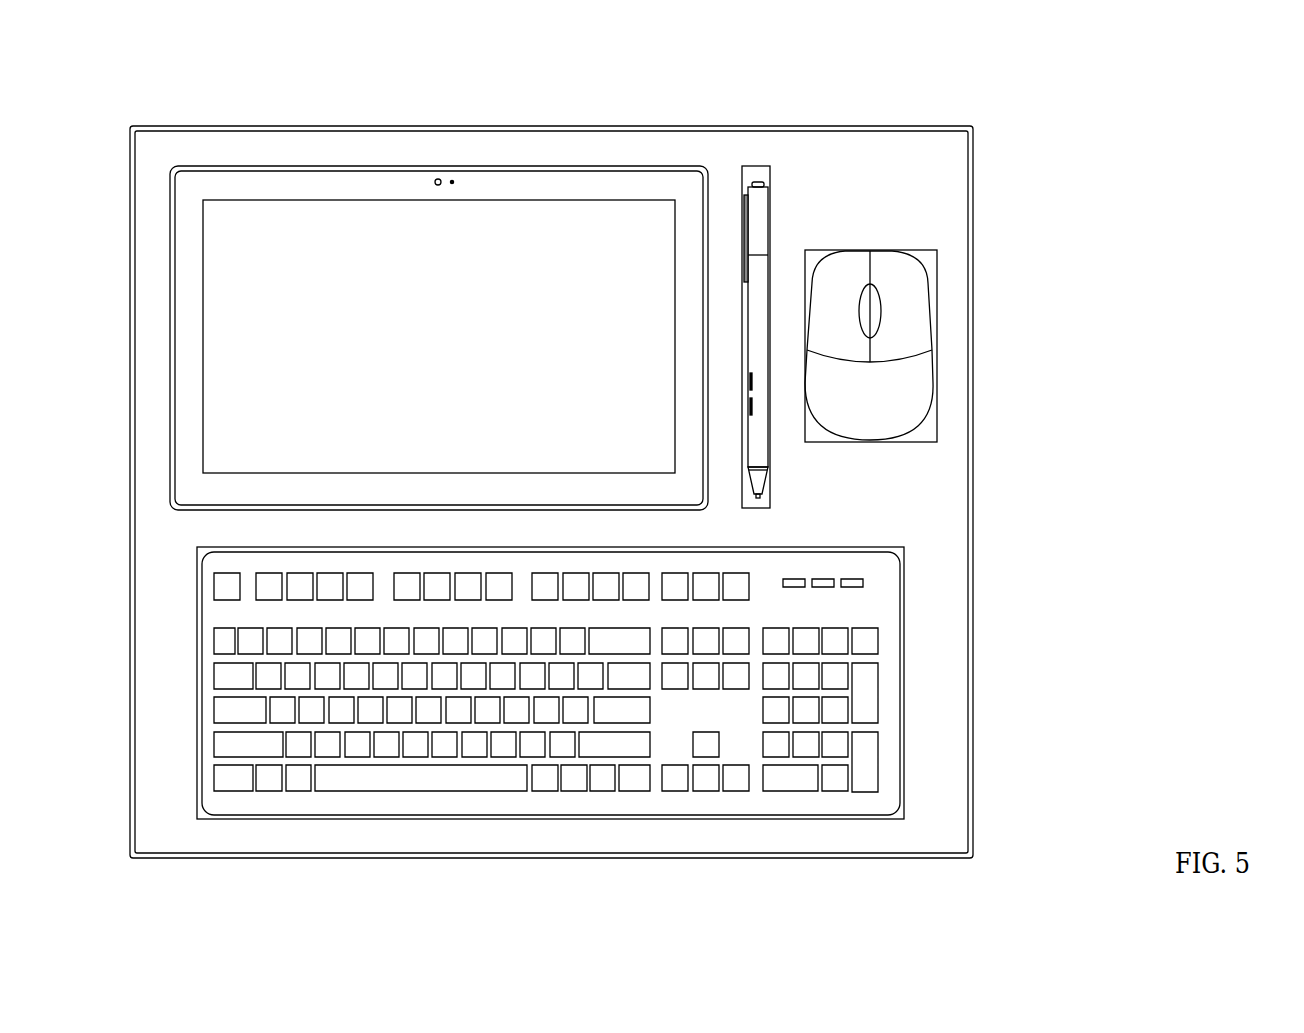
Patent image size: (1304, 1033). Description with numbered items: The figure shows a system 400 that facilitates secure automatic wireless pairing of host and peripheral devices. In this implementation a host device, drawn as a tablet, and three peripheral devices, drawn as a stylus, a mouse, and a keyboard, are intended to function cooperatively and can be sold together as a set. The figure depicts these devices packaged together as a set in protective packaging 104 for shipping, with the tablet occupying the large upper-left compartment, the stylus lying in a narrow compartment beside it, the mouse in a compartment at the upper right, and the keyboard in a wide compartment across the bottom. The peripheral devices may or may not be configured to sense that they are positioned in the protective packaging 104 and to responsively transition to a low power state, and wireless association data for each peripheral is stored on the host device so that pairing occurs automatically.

The system 400 is at (718, 35).
The protective packaging 104 is at (530, 122).